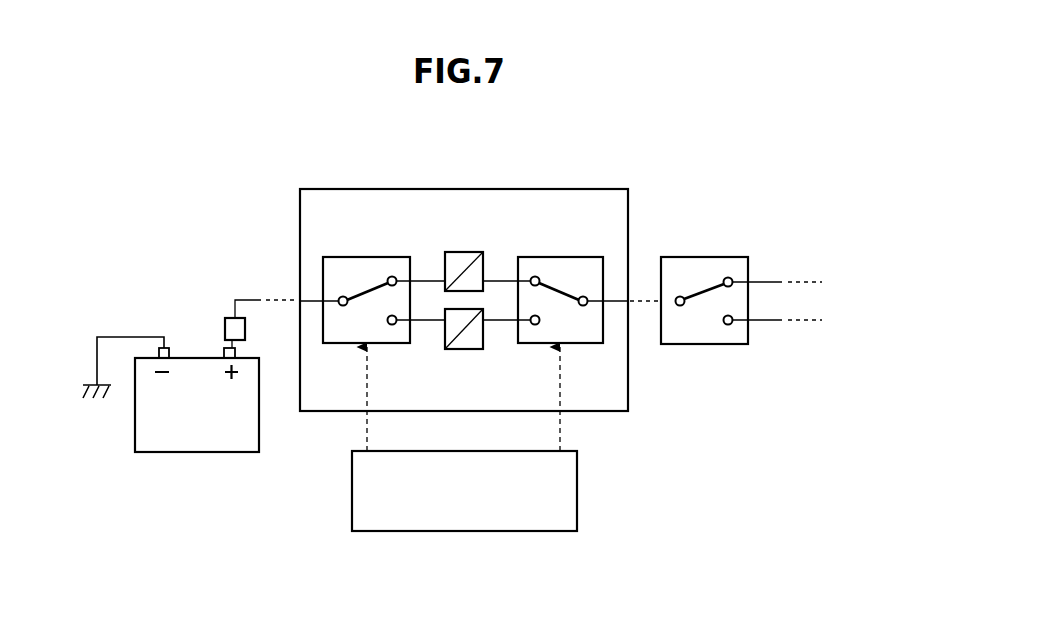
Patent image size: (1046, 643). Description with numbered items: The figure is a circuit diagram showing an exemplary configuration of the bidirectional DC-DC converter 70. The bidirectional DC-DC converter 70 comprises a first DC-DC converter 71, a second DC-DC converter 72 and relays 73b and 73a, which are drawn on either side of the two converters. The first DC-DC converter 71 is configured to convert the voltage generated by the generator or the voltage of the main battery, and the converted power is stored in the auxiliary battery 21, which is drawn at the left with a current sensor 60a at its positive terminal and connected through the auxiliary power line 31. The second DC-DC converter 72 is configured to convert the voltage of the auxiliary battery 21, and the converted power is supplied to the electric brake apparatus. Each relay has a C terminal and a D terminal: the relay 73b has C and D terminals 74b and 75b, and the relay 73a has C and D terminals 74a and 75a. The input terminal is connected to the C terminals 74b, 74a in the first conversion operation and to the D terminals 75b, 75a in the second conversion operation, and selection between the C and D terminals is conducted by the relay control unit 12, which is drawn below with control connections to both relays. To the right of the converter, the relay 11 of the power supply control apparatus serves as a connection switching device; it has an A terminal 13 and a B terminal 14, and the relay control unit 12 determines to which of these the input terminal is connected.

The bidirectional DC-DC converter 70 is at (593, 189).
The relay 73b is at (352, 257).
The C terminal 74b is at (394, 277).
The D terminal 75b is at (393, 325).
The first DC-DC converter 71 is at (465, 252).
The second DC-DC converter 72 is at (463, 349).
The relay 73a is at (587, 257).
The C terminal 74a is at (533, 277).
The D terminal 75a is at (534, 325).
The relay 11 is at (688, 257).
The A terminal 13 is at (731, 278).
The B terminal 14 is at (727, 325).
The relay control unit 12 is at (577, 491).
The auxiliary battery 21 is at (197, 452).
The current sensor 60a is at (225, 330).
The auxiliary power line 31 is at (247, 300).